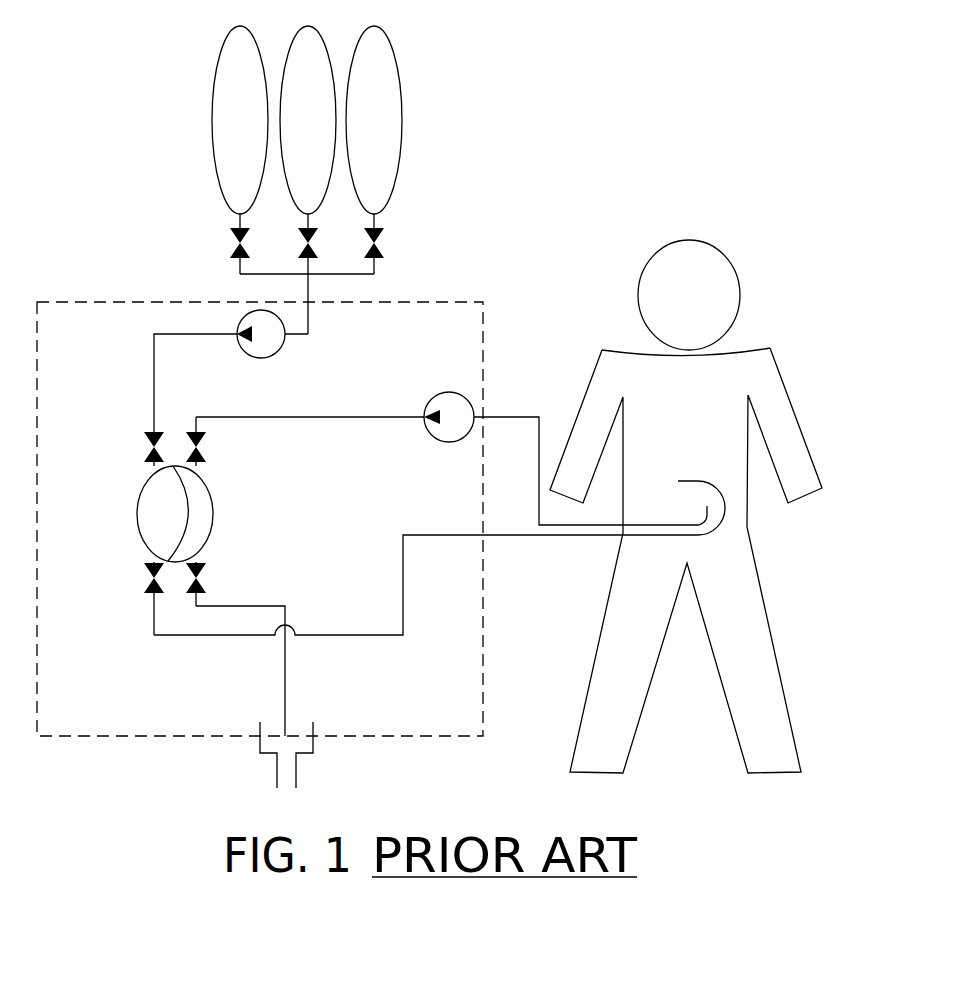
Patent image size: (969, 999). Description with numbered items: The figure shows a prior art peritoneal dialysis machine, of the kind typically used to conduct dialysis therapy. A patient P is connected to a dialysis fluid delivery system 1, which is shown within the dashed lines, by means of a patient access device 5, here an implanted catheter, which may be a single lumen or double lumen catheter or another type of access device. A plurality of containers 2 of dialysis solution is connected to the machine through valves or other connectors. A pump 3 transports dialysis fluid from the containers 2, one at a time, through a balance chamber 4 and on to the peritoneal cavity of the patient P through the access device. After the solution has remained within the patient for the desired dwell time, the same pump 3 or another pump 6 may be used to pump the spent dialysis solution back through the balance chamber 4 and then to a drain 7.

The dialysis fluid delivery system 1 is at (560, 168).
The containers 2 is at (401, 93).
The pump 3 is at (243, 320).
The balance chamber 4 is at (137, 512).
The patient access device 5 is at (562, 536).
The another pump 6 is at (457, 402).
The drain 7 is at (313, 732).
The patient P is at (767, 368).